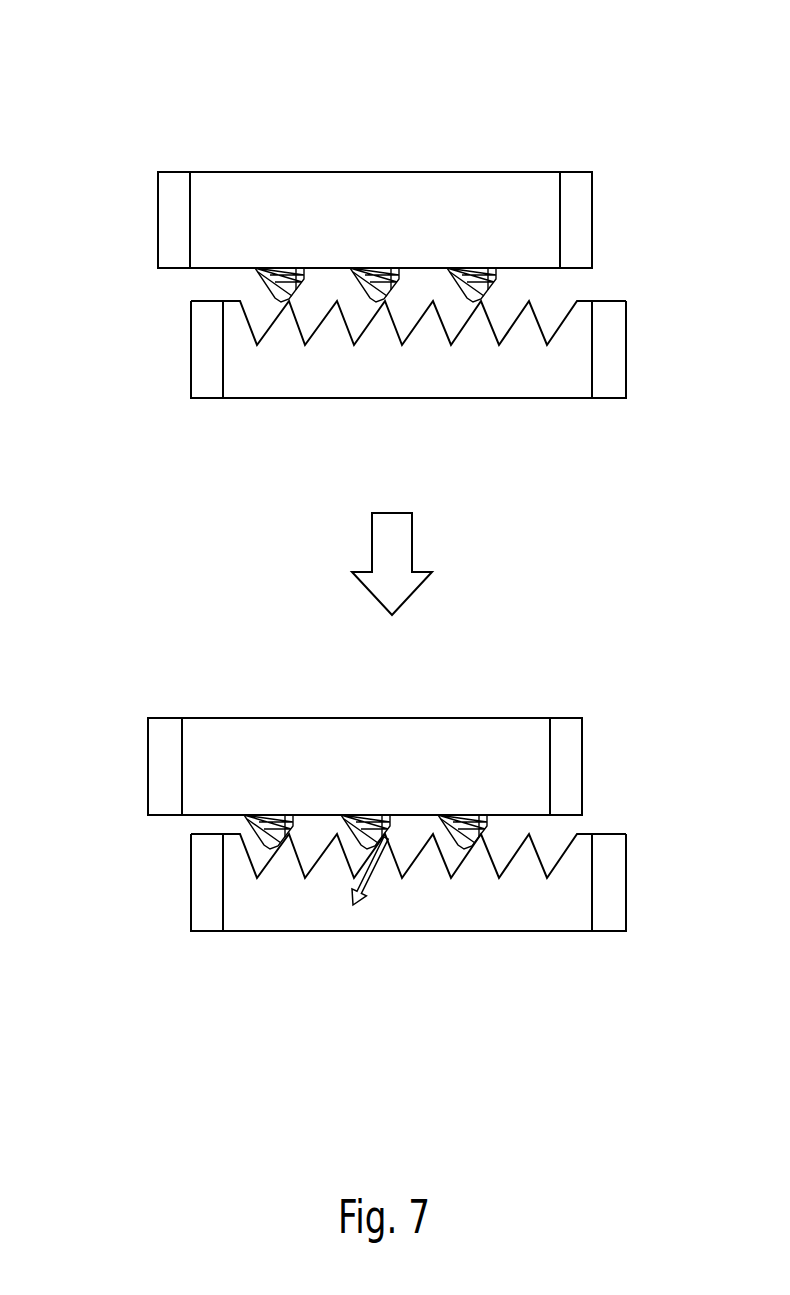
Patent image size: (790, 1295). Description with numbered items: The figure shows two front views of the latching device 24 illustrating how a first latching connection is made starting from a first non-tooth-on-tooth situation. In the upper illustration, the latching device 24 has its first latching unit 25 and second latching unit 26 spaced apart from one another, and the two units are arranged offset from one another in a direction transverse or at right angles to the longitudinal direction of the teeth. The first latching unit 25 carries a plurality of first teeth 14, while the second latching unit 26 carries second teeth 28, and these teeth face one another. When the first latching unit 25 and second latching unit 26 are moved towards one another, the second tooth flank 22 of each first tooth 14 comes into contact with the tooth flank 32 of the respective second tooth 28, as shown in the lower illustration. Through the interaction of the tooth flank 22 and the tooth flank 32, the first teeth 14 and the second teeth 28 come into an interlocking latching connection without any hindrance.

The first tooth 14 is at (273, 268).
The second tooth flank 22 is at (396, 832).
The latching device 24 is at (607, 120).
The first latching unit 25 is at (167, 138).
The second latching unit 26 is at (197, 412).
The second tooth 28 is at (525, 335).
The tooth flank 32 is at (352, 857).